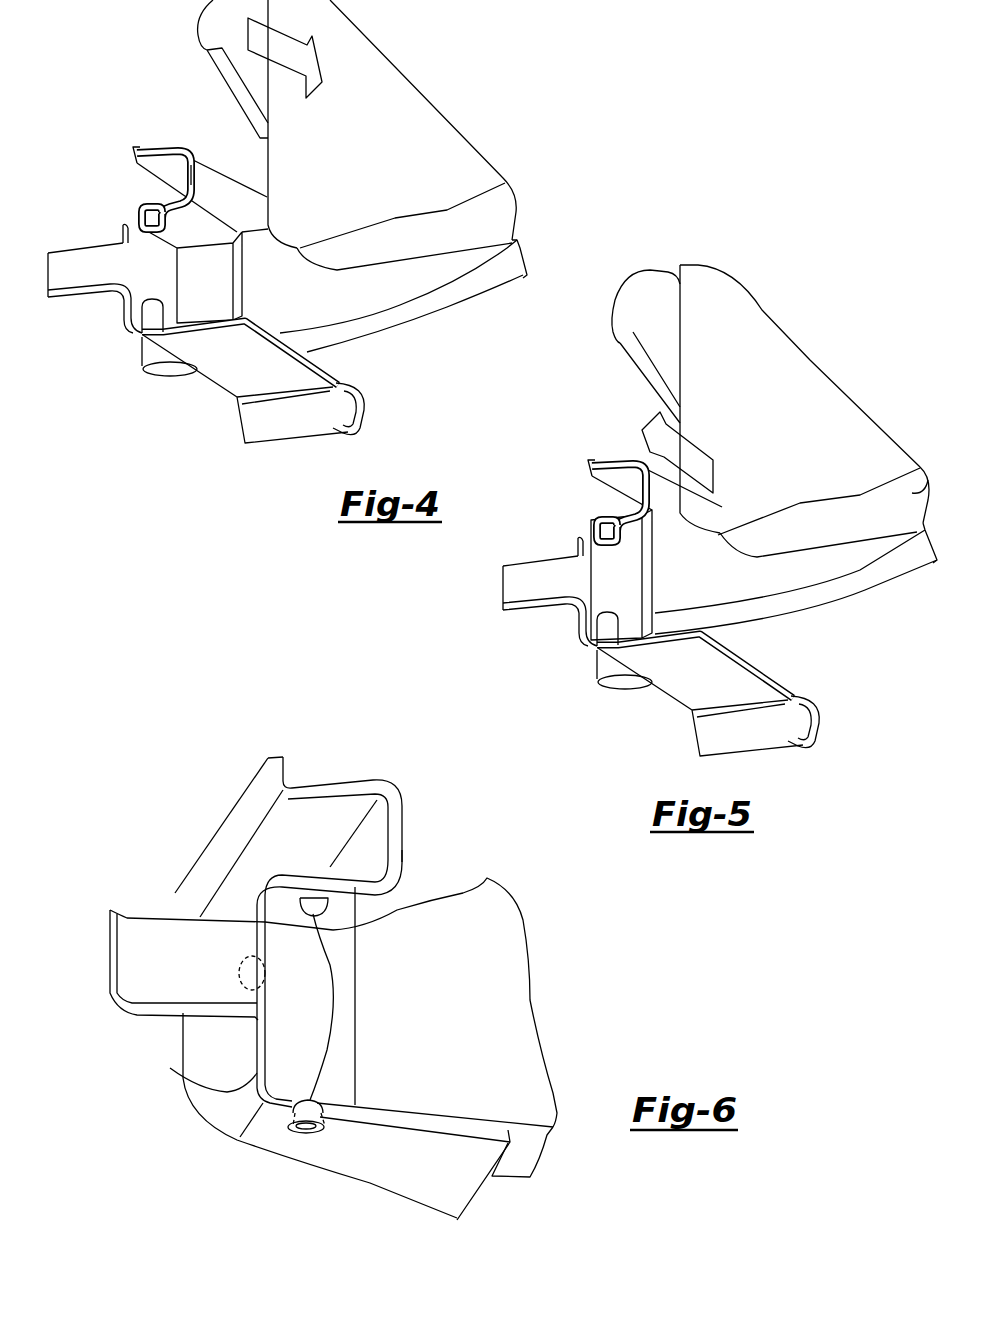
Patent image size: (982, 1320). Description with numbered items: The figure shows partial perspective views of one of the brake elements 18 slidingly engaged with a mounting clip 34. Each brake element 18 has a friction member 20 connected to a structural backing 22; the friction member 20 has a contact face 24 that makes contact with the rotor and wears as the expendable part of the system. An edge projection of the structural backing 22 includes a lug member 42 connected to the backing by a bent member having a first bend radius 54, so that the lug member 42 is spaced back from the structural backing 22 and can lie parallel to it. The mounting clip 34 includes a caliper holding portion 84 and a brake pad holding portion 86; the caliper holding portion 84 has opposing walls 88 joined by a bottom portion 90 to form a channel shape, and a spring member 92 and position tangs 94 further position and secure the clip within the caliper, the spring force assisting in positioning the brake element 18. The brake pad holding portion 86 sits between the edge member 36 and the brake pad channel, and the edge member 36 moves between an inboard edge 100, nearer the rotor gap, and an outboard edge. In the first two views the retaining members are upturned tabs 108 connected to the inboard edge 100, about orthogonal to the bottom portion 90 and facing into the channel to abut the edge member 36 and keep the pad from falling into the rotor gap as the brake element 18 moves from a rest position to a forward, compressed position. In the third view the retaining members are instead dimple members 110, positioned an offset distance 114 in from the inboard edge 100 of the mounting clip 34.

In FIG. 4, the brake element 18 is at (447, 95).
In FIG. 5, the brake element 18 is at (855, 369).
In FIG. 6, the brake element 18 is at (560, 990).
In FIG. 4, the friction member 20 is at (505, 211).
In FIG. 5, the friction member 20 is at (927, 478).
In FIG. 4, the structural backing 22 is at (507, 280).
In FIG. 5, the structural backing 22 is at (873, 585).
In FIG. 4, the contact face 24 is at (381, 164).
In FIG. 5, the contact face 24 is at (777, 434).
In FIG. 4, the mounting clip 34 is at (120, 374).
In FIG. 5, the mounting clip 34 is at (683, 702).
In FIG. 6, the mounting clip 34 is at (183, 1126).
In FIG. 4, the edge member 36 is at (345, 296).
In FIG. 5, the edge member 36 is at (749, 578).
In FIG. 6, the edge member 36 is at (392, 1073).
In FIG. 4, the lug member 42 is at (212, 282).
In FIG. 5, the lug member 42 is at (623, 575).
In FIG. 6, the lug member 42 is at (302, 1066).
In FIG. 6, the first bend radius 54 is at (170, 1068).
In FIG. 4, the caliper holding portion 84 is at (158, 148).
In FIG. 5, the caliper holding portion 84 is at (617, 466).
In FIG. 6, the caliper holding portion 84 is at (373, 845).
In FIG. 4, the brake pad holding portion 86 is at (140, 216).
In FIG. 5, the brake pad holding portion 86 is at (584, 511).
In FIG. 6, the opposing walls 88 is at (302, 815).
In FIG. 6, the bottom portion 90 is at (367, 865).
In FIG. 4, the spring member 92 is at (277, 440).
In FIG. 5, the spring member 92 is at (708, 718).
In FIG. 4, the position tang 94 is at (62, 251).
In FIG. 5, the position tang 94 is at (550, 575).
In FIG. 6, the position tang 94 is at (221, 965).
In FIG. 4, the inboard edge 100 is at (195, 177).
In FIG. 4, the upturned tab 108 is at (143, 310).
In FIG. 5, the upturned tab 108 is at (596, 629).
In FIG. 6, the dimple member 110 is at (270, 973).
In FIG. 6, the offset distance 114 is at (335, 895).